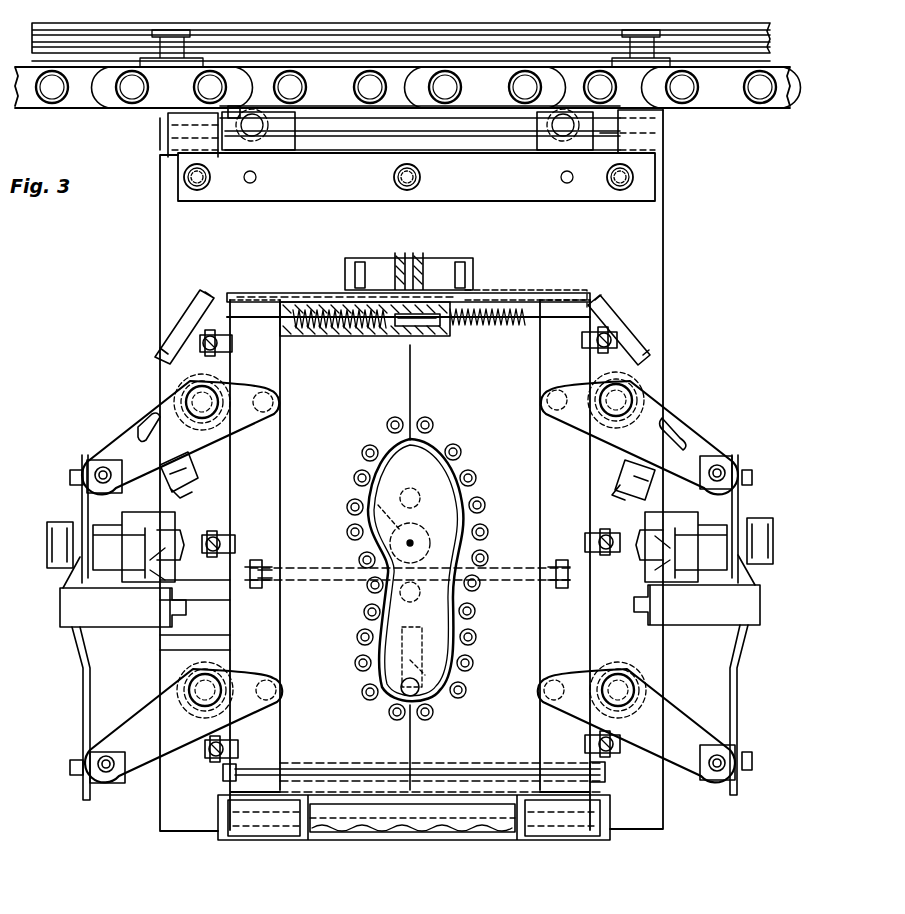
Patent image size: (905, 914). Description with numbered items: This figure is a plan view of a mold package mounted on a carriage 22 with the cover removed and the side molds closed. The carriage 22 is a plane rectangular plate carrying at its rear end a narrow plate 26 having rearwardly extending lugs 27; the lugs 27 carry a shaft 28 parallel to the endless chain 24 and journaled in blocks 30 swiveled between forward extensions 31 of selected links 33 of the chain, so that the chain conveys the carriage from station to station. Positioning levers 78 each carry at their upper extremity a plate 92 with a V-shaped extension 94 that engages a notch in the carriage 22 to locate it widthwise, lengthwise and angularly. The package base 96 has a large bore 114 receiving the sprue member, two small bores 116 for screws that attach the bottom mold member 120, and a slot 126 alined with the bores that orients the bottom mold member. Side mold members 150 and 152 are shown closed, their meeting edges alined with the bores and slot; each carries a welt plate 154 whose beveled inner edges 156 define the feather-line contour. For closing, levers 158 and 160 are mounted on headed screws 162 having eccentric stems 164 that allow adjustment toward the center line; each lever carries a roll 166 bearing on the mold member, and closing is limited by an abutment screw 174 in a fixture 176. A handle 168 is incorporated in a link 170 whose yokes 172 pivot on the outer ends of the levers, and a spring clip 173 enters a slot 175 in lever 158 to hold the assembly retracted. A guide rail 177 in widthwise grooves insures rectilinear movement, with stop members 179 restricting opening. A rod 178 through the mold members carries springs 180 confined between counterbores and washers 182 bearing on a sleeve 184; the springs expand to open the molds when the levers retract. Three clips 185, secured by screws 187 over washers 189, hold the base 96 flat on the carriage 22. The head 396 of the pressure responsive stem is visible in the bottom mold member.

The carriage 22 is at (158, 243).
The endless chain 24 is at (100, 102).
The narrow plate 26 is at (305, 196).
The lugs 27 is at (180, 140).
The shaft 28 is at (342, 128).
The blocks 30 is at (540, 164).
The forward extensions 31 is at (275, 140).
The links 33 is at (245, 73).
The positioning levers 78 is at (92, 515).
The plate 92 is at (160, 565).
The V-shaped extension 94 is at (175, 555).
The base 96 is at (235, 648).
The large bore 114 is at (372, 500).
The small bores 116 is at (408, 490).
The bottom mold member 120 is at (452, 508).
The slot 126 is at (435, 672).
The side mold member 150 is at (322, 334).
The side mold member 152 is at (452, 330).
The welt plate 154 is at (283, 430).
The beveled inner edges 156 is at (390, 592).
The lever 158 is at (725, 455).
The lever 160 is at (692, 730).
The headed screws 162 is at (635, 400).
The eccentric stems 164 is at (640, 372).
The roll 166 is at (540, 408).
The handle 168 is at (755, 596).
The link 170 is at (748, 655).
The yokes 172 is at (740, 480).
The spring clip 173 is at (620, 322).
The abutment screw 174 is at (628, 462).
The slot 175 is at (690, 440).
The fixture 176 is at (650, 485).
The guide rail 177 is at (555, 598).
The rod 178 is at (258, 318).
The stop members 179 is at (258, 588).
The springs 180 is at (322, 298).
The washers 182 is at (395, 330).
The sleeve 184 is at (388, 298).
The clips 185 is at (232, 344).
The screws 187 is at (205, 345).
The washers 189 is at (216, 358).
The head 396 is at (418, 687).